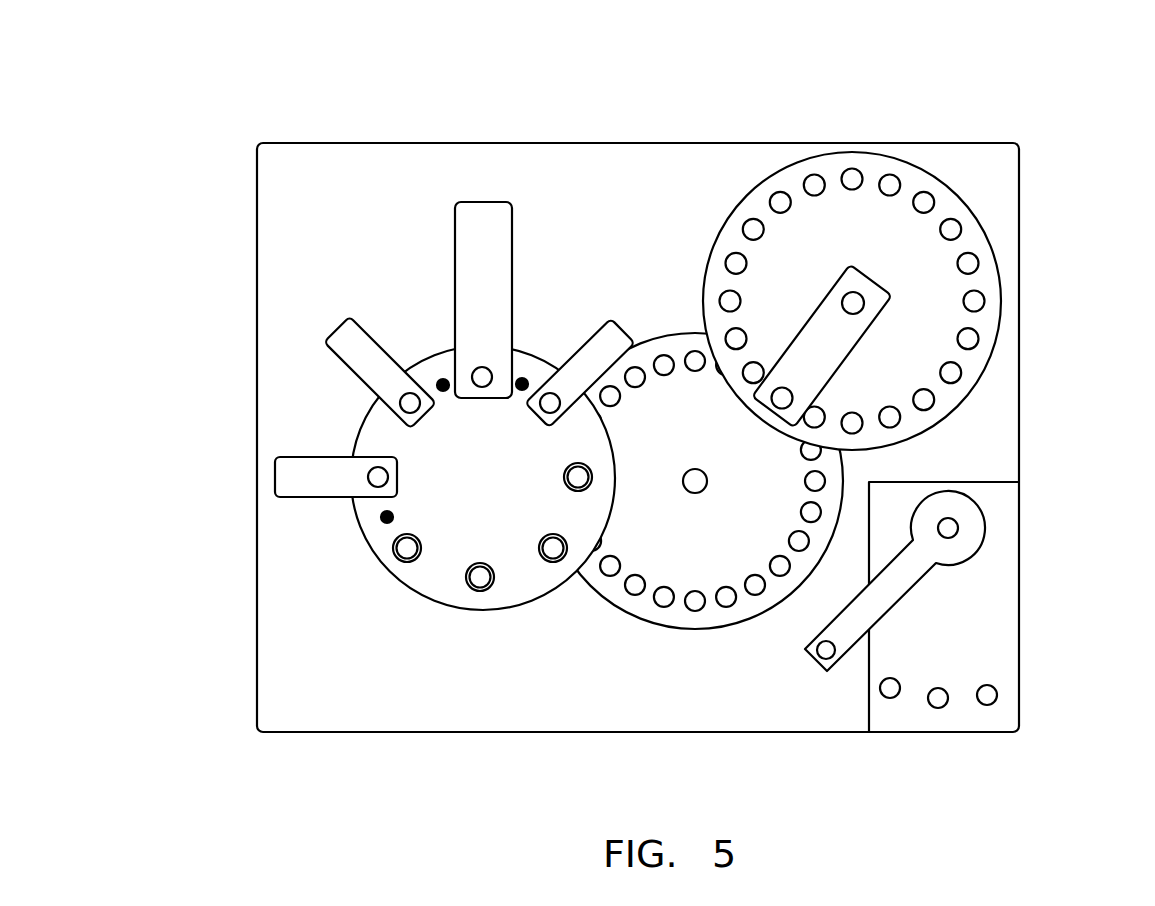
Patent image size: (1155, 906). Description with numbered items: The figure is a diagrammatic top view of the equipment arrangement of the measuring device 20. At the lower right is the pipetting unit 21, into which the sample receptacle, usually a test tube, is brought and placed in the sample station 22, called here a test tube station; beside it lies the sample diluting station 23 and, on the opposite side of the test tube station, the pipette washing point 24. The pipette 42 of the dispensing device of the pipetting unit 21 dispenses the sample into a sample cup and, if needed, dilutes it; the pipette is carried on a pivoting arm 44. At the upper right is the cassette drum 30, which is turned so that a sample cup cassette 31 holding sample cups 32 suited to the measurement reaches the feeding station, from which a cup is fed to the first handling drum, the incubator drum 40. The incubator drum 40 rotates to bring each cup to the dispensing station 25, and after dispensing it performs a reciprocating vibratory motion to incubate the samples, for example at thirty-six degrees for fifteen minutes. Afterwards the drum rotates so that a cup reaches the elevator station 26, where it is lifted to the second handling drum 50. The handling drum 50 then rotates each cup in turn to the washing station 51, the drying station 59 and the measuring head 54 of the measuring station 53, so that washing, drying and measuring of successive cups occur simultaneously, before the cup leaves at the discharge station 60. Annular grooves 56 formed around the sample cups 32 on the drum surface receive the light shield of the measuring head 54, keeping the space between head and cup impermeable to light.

The measuring device 20 is at (1000, 107).
The pipetting unit 21 is at (1013, 603).
The sample station 22 is at (937, 708).
The sample diluting station 23 is at (990, 705).
The pipette washing point 24 is at (887, 698).
The dispensing station 25 is at (779, 563).
The elevator station 26 is at (592, 468).
The cassette drum 30 is at (1010, 293).
The sample cup cassette 31 is at (783, 397).
The sample cup 32 is at (470, 578).
The incubator drum 40 is at (604, 616).
The pipette 42 is at (822, 652).
The lever 44 is at (985, 528).
The handling drum 50 is at (338, 566).
The washing station 51 is at (376, 479).
The measuring station 53 is at (467, 242).
The measuring head 54 is at (480, 376).
The annular groove 56 is at (488, 597).
The drying station 59 is at (407, 400).
The discharge station 60 is at (550, 402).